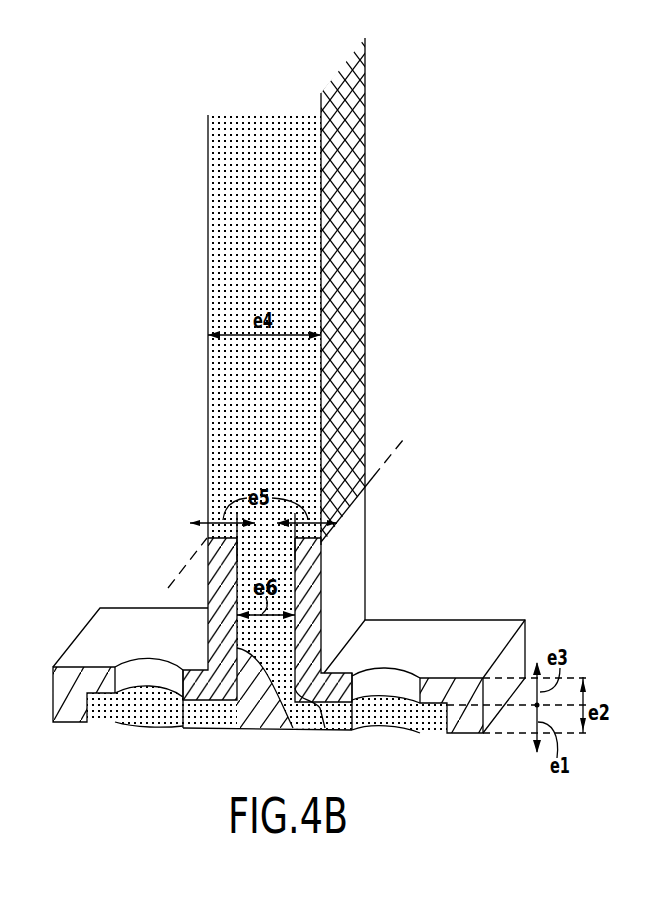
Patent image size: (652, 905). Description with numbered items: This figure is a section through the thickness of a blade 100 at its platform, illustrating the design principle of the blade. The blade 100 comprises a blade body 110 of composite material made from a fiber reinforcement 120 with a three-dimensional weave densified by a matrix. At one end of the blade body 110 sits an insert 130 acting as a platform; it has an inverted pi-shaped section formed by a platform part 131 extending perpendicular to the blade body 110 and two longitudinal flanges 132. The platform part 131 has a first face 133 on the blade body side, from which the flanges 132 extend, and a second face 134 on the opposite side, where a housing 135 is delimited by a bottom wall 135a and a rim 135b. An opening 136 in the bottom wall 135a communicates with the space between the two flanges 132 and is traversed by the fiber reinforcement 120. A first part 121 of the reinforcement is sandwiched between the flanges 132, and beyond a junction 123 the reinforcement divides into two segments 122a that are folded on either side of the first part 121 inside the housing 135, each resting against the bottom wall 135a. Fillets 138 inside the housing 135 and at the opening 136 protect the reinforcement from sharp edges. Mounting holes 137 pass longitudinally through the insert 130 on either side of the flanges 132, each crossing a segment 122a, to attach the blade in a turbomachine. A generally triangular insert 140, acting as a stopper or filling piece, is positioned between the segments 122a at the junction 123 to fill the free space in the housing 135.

The blade 100 is at (143, 120).
The blade body 110 is at (385, 103).
The fiber reinforcement 120 is at (343, 204).
The first part 121 is at (278, 640).
The segments 122a is at (150, 680).
The junction 123 is at (228, 655).
The insert 130 is at (580, 603).
The platform part 131 is at (107, 608).
The flanges 132 is at (355, 530).
The first face 133 is at (496, 620).
The second face 134 is at (462, 737).
The housing 135 is at (348, 740).
The bottom wall 135a is at (153, 717).
The rim 135b is at (103, 715).
The opening 136 is at (282, 740).
The mounting holes 137 is at (82, 667).
The fillets 138 is at (213, 720).
The insert 140 is at (258, 720).